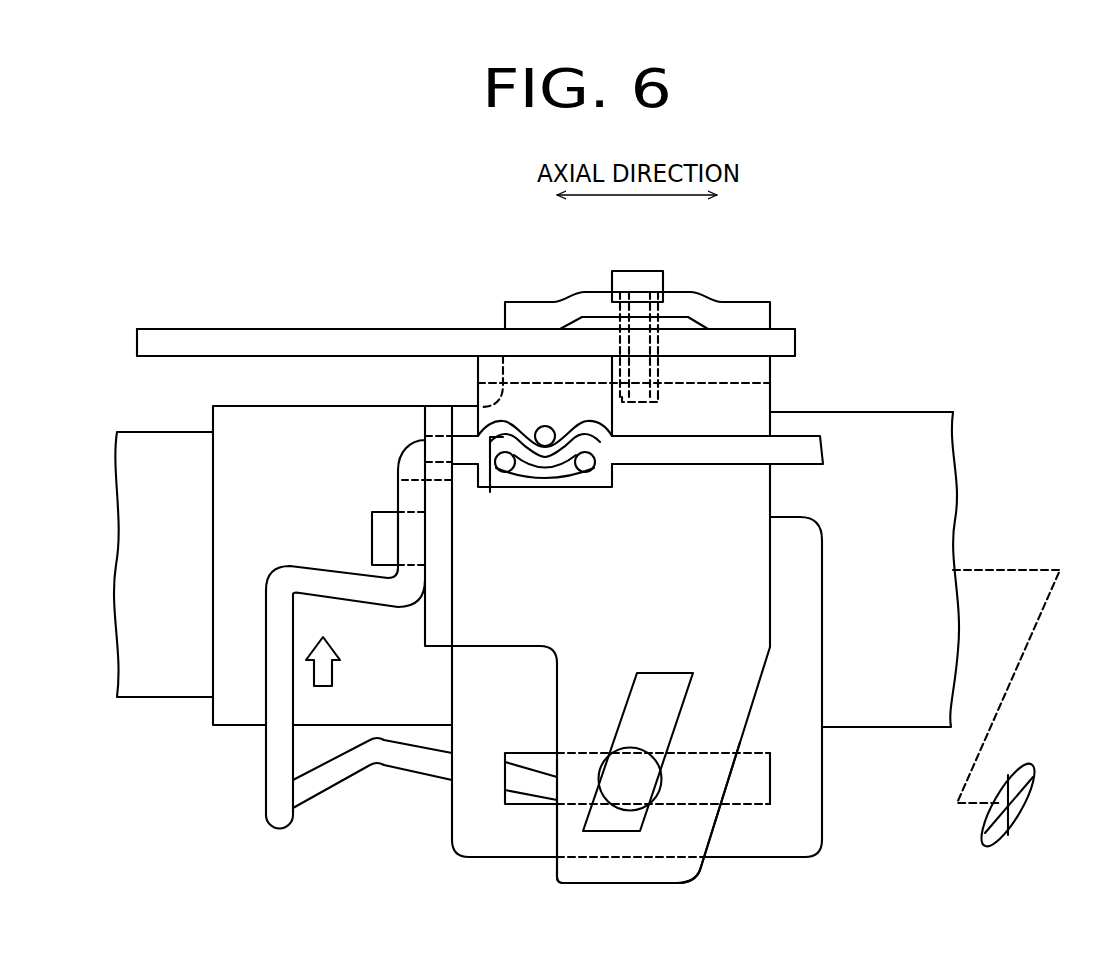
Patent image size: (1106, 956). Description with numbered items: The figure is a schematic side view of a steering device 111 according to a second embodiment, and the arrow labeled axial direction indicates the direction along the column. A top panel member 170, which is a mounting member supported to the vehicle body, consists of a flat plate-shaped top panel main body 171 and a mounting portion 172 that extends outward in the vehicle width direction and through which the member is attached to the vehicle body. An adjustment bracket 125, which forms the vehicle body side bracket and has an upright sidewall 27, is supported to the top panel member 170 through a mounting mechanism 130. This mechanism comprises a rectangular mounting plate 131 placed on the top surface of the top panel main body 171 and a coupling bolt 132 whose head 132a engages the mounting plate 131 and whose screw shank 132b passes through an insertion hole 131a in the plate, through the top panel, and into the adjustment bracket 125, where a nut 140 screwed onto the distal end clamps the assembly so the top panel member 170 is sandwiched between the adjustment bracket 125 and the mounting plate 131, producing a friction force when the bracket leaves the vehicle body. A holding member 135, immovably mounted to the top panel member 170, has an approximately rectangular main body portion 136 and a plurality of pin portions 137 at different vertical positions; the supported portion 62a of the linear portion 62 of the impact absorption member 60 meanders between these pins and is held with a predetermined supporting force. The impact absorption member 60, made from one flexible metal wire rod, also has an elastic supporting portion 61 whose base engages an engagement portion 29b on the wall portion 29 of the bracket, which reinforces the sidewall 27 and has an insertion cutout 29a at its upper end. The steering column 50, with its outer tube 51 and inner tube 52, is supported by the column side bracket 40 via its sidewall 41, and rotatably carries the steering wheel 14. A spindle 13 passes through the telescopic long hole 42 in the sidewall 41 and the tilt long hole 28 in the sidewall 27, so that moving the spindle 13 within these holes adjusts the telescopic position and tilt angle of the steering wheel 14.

The steering device 111 is at (1007, 230).
The mounting mechanism 130 is at (577, 263).
The mounting plate 131 is at (528, 312).
The insertion hole 131a is at (630, 288).
The coupling bolt 132 is at (710, 312).
The head 132a is at (650, 272).
The screw shank 132b is at (668, 290).
The holding member 135 is at (480, 390).
The main body portion 136 is at (492, 365).
The pin portions 137 is at (628, 484).
The nut 140 is at (652, 396).
The top panel member 170 is at (368, 305).
The top panel main body 171 is at (242, 336).
The mounting portion 172 is at (740, 343).
The adjustment bracket 125 is at (860, 569).
The sidewall 27 is at (838, 512).
The steering wheel 14 is at (1025, 808).
The linear portion 62 is at (728, 455).
The supported portion 62a is at (490, 490).
The steering column 50 is at (150, 370).
The outer tube 51 is at (233, 410).
The inner tube 52 is at (200, 437).
The wall portion 29 is at (422, 623).
The insertion cutout 29a is at (402, 480).
The engagement portion 29b is at (372, 535).
The impact absorption member 60 is at (330, 697).
The elastic supporting portion 61 is at (268, 654).
The column side bracket 40 is at (697, 700).
The sidewall 41 is at (648, 812).
The telescopic long hole 42 is at (752, 802).
The tilt long hole 28 is at (634, 684).
The spindle 13 is at (652, 788).